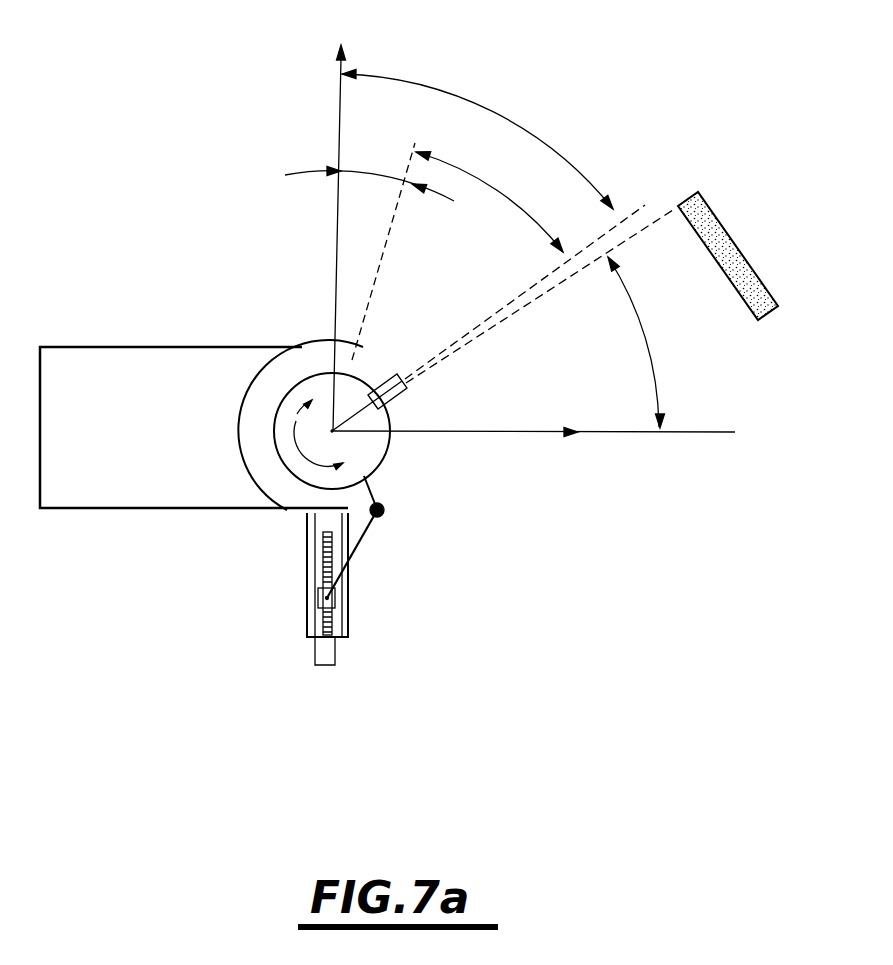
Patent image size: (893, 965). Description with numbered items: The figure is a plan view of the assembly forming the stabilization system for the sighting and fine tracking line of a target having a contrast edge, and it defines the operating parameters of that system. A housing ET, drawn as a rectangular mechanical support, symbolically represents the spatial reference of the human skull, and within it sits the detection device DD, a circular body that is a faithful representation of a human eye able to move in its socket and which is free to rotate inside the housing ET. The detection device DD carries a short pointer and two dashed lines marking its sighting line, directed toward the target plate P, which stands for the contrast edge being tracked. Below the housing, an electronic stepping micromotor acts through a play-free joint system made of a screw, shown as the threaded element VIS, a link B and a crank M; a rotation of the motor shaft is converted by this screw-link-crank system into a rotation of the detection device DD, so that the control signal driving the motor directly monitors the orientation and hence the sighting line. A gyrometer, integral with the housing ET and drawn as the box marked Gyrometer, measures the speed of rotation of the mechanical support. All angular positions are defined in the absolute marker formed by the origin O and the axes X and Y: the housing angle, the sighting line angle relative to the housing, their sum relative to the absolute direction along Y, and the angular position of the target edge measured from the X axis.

The housing ET is at (322, 344).
The detection device DD is at (383, 454).
The target plate P is at (733, 229).
The crank M is at (381, 506).
The link B is at (364, 538).
The screw VIS is at (340, 614).
The gyrometer Gyrometer is at (126, 474).
The origin of absolute marker O is at (322, 440).
The X axis of absolute marker X is at (533, 445).
The Y axis of absolute marker Y is at (342, 220).